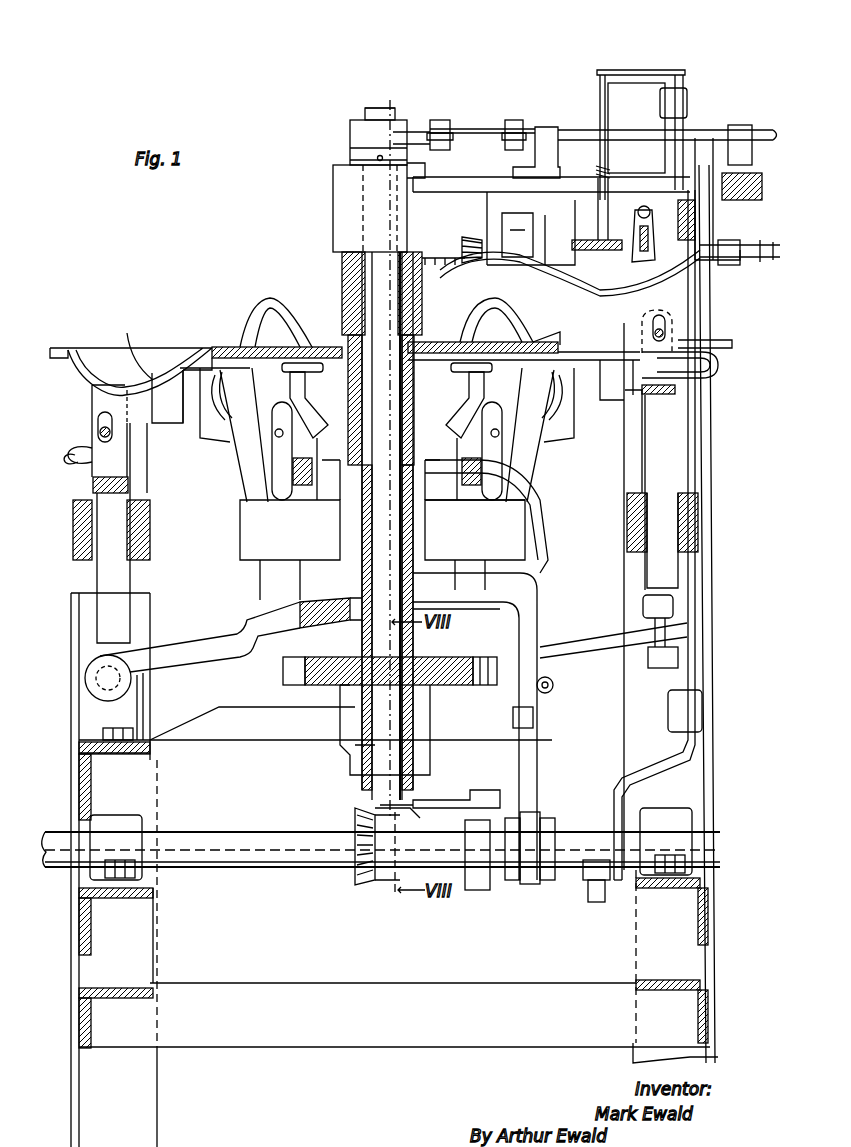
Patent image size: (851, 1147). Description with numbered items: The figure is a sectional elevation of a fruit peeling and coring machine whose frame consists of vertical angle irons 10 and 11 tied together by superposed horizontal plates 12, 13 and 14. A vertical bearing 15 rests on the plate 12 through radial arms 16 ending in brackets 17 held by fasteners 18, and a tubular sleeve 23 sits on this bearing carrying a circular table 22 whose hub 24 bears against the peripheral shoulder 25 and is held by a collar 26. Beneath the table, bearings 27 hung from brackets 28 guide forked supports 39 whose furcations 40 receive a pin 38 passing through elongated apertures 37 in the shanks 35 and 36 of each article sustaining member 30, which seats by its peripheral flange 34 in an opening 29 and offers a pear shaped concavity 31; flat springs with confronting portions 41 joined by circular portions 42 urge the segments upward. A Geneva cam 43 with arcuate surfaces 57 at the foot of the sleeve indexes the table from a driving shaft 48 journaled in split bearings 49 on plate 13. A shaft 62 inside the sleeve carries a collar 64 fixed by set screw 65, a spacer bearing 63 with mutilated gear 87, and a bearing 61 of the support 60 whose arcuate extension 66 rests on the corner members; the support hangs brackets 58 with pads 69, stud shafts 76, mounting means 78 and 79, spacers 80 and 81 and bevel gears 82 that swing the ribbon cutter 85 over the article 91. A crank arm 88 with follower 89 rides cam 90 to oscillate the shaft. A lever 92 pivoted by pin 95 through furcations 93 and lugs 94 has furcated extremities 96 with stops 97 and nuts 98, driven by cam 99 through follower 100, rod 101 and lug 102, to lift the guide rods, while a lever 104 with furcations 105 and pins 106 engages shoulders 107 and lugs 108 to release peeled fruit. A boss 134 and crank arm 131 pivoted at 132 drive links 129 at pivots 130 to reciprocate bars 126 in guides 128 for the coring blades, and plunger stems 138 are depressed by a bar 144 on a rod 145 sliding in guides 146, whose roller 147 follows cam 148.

The angle iron 10 is at (71, 600).
The angle iron 11 is at (708, 690).
The rectangular plate 12 is at (120, 762).
The rectangular plate 13 is at (130, 898).
The rectangular plate 14 is at (130, 988).
The bearing 15 is at (430, 715).
The arm 16 is at (232, 748).
The bracket 17 is at (90, 748).
The fastener 18 is at (133, 730).
The table 22 is at (218, 345).
The tubular sleeve 23 is at (360, 640).
The hub 24 is at (345, 470).
The peripheral shoulder 25 is at (340, 355).
The collar 26 is at (445, 495).
The bearing 27 is at (135, 528).
The bracket 28 is at (250, 495).
The opening 29 is at (200, 348).
The article sustaining member 30 is at (247, 335).
The concavity 31 is at (127, 333).
The peripheral flange 34 is at (50, 348).
The shank 35 is at (116, 404).
The shank 36 is at (310, 498).
The elongated aperture 37 is at (98, 418).
The pin 38 is at (98, 436).
The support 39 is at (125, 575).
The furcation 40 is at (95, 490).
The confronting portion 41 is at (70, 458).
The circular portion 42 is at (732, 348).
The Geneva cam 43 is at (435, 670).
The driving shaft 48 is at (200, 870).
The split bearing 49 is at (135, 822).
The arcuate surface 57 is at (478, 687).
The bracket 58 is at (490, 220).
The support 60 is at (480, 190).
The bearing 61 is at (350, 200).
The shaft 62 is at (400, 530).
The spacer bearing 63 is at (345, 290).
The collar 64 is at (352, 150).
The set screw 65 is at (376, 157).
The arcuate extension 66 is at (762, 185).
The pad 69 is at (593, 220).
The stud shaft 76 is at (475, 238).
The mounting means 78 is at (530, 243).
The mounting means 79 is at (727, 266).
The tubular spacer element 80 is at (525, 262).
The tubular spacer element 81 is at (740, 250).
The bevel gear 82 is at (463, 255).
The metallic ribbon 85 is at (640, 255).
The mutilated gear 87 is at (463, 300).
The crank arm 88 is at (430, 805).
The cam follower 89 is at (482, 892).
The cam 90 is at (470, 882).
The article 91 is at (600, 290).
The lever 92 is at (322, 600).
The furcation 93 is at (218, 640).
The lug 94 is at (125, 705).
The pin 95 is at (100, 678).
The furcated extremity 96 is at (612, 645).
The stop 97 is at (675, 605).
The threaded nut 98 is at (680, 652).
The cam 99 is at (528, 884).
The cam follower 100 is at (522, 728).
The rod 101 is at (540, 752).
The lug 102 is at (555, 675).
The lever 104 is at (552, 548).
The furcation 105 is at (282, 335).
The pin 106 is at (282, 368).
The shoulder 107 is at (152, 430).
The lug 108 is at (140, 465).
The bar 126 is at (632, 138).
The guide 128 is at (548, 128).
The link 129 is at (485, 128).
The pivot 130 is at (515, 122).
The crank arm 131 is at (425, 130).
The pivot point 132 is at (438, 120).
The boss 134 is at (365, 130).
The stem 138 is at (600, 100).
The bar 144 is at (620, 72).
The rod 145 is at (660, 72).
The guide 146 is at (685, 100).
The roller 147 is at (594, 902).
The cam 148 is at (610, 800).